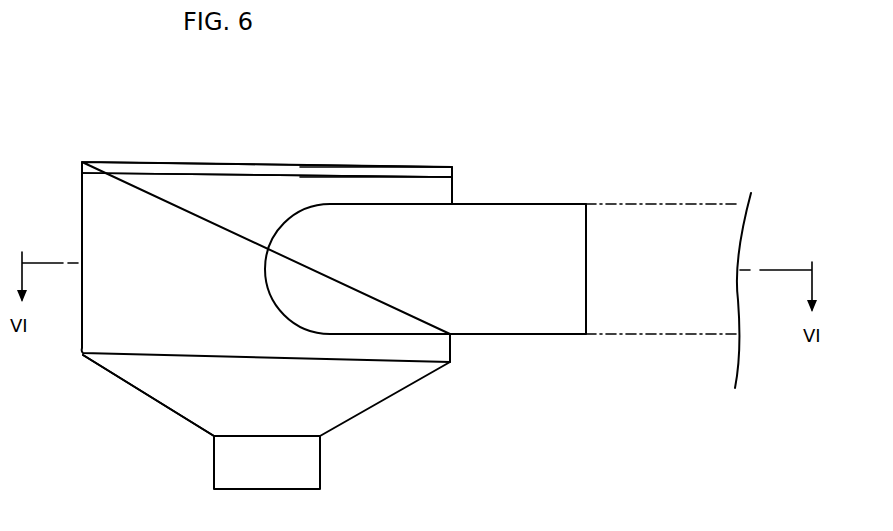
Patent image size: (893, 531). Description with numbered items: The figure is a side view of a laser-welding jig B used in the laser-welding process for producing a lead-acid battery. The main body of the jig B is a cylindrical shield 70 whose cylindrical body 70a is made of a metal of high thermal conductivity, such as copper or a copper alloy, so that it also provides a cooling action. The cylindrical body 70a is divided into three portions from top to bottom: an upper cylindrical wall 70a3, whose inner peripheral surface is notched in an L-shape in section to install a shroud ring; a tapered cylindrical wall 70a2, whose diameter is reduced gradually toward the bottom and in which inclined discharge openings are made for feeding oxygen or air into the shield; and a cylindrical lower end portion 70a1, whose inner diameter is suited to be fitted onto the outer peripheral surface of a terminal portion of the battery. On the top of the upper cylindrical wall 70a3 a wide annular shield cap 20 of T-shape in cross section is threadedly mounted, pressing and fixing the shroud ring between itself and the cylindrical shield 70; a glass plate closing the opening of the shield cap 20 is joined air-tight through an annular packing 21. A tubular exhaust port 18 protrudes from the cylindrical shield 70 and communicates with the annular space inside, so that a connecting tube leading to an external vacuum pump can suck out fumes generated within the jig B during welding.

The laser-welding jig B is at (389, 114).
The cylindrical shield 70 is at (475, 171).
The cylindrical body 70a is at (247, 194).
The annular shield cap 20 is at (427, 172).
The tubular exhaust port 18 is at (528, 317).
The annular packing 21 is at (688, 336).
The upper cylindrical wall 70a3 is at (121, 327).
The tapered cylindrical wall 70a2 is at (197, 395).
The cylindrical lower end portion 70a1 is at (306, 463).